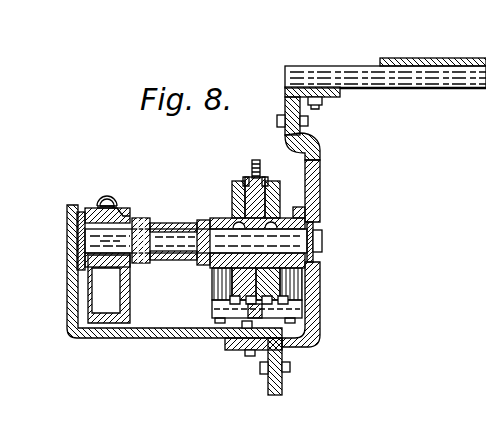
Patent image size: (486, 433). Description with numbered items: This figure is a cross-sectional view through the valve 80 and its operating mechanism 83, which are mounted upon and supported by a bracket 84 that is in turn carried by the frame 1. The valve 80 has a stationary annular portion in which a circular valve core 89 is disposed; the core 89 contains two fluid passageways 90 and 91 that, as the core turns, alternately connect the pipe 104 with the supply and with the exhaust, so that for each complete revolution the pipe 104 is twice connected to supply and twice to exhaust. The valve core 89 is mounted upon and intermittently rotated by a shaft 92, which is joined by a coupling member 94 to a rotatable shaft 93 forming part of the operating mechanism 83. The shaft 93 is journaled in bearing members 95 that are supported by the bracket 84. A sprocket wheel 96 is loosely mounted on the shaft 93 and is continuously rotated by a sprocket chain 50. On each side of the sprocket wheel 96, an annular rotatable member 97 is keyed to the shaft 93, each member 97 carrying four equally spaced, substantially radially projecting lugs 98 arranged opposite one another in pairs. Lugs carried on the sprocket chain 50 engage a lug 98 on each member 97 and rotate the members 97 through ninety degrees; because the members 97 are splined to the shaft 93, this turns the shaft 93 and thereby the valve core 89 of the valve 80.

The frame 1 is at (287, 96).
The sprocket chain 50 is at (256, 160).
The valve 80 is at (78, 270).
The operating mechanism 83 is at (232, 197).
The bracket 84 is at (318, 304).
The valve core 89 is at (77, 232).
The fluid passageway 90 is at (109, 289).
The fluid passageway 91 is at (94, 210).
The shaft 92 is at (137, 219).
The rotatable shaft 93 is at (210, 221).
The coupling member 94 is at (166, 224).
The bearing member 95 is at (210, 262).
The sprocket wheel 96 is at (261, 190).
The annular rotatable member 97 is at (234, 184).
The lug 98 is at (245, 178).
The pipe 104 is at (108, 200).